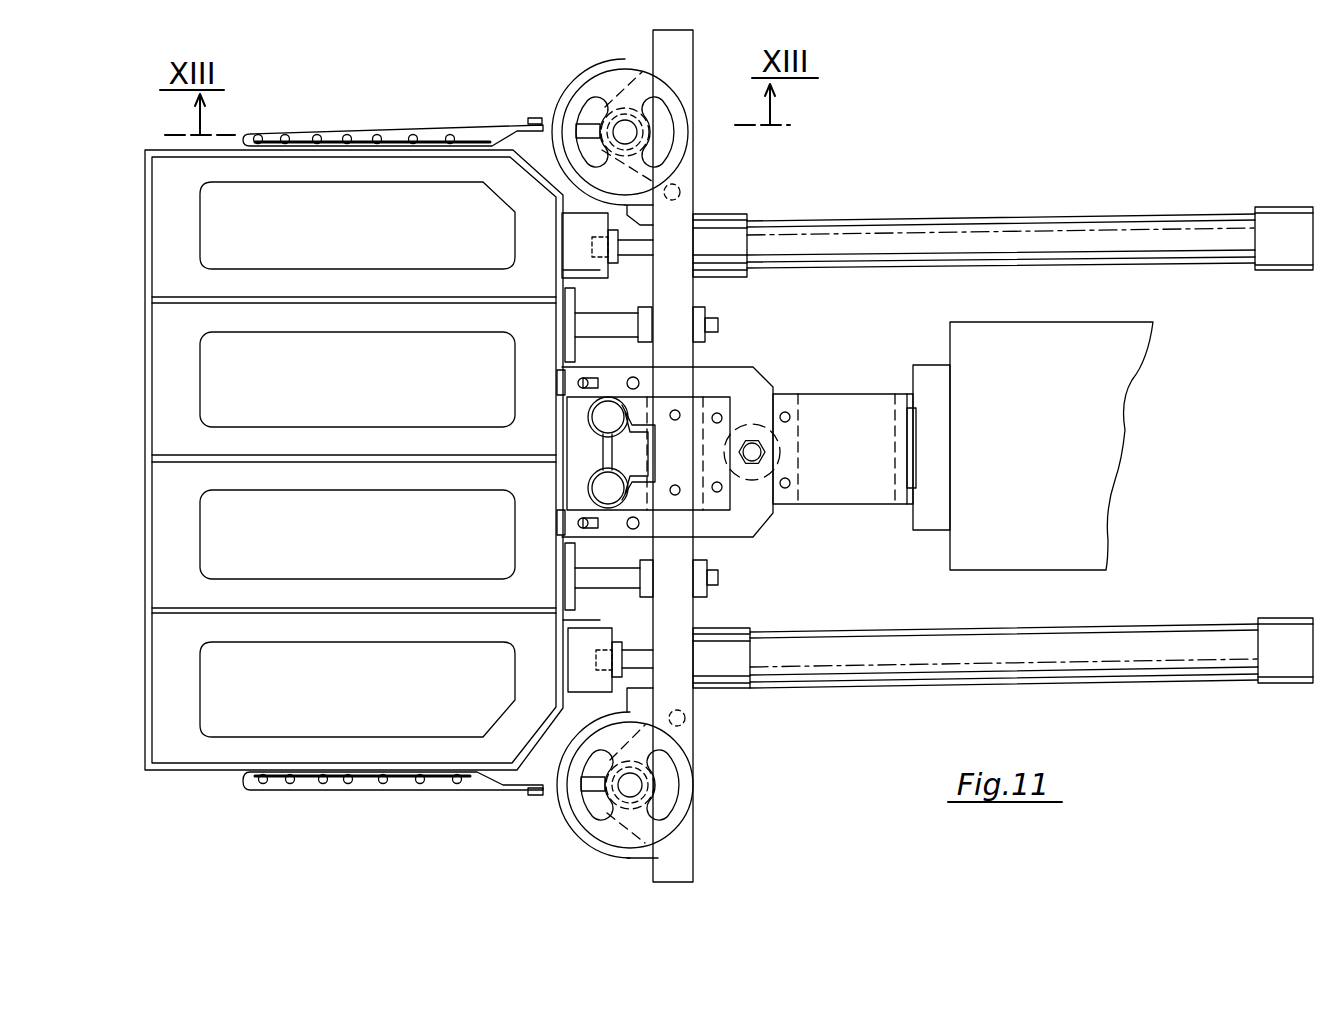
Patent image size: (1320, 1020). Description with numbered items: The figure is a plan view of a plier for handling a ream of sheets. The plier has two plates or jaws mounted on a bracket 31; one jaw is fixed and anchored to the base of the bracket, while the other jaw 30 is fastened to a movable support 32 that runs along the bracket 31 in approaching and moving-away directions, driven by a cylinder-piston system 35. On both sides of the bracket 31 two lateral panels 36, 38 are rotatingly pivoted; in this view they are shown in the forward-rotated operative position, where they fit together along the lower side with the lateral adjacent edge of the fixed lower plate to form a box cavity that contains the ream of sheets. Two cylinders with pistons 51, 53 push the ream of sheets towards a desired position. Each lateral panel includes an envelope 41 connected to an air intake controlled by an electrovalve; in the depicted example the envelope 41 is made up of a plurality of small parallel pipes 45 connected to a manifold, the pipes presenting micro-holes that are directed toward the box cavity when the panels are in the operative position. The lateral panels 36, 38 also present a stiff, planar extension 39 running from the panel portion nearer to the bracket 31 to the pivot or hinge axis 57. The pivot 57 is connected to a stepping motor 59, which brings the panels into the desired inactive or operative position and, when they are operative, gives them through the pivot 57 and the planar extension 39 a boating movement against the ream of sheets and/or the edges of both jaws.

The jaw 30 is at (165, 352).
The bracket 31 is at (680, 610).
The movable support 32 is at (723, 377).
The cylinder-piston system 35 is at (772, 393).
The lateral panel 36 is at (303, 786).
The lateral panel 38 is at (302, 135).
The planar extension 39 is at (543, 128).
The envelope 41 is at (360, 136).
The small parallel pipes 45 is at (446, 133).
The cylinder with piston 51 is at (1158, 655).
The cylinder with piston 53 is at (1137, 230).
The pivot 57 is at (630, 137).
The stepping motor 59 is at (647, 87).